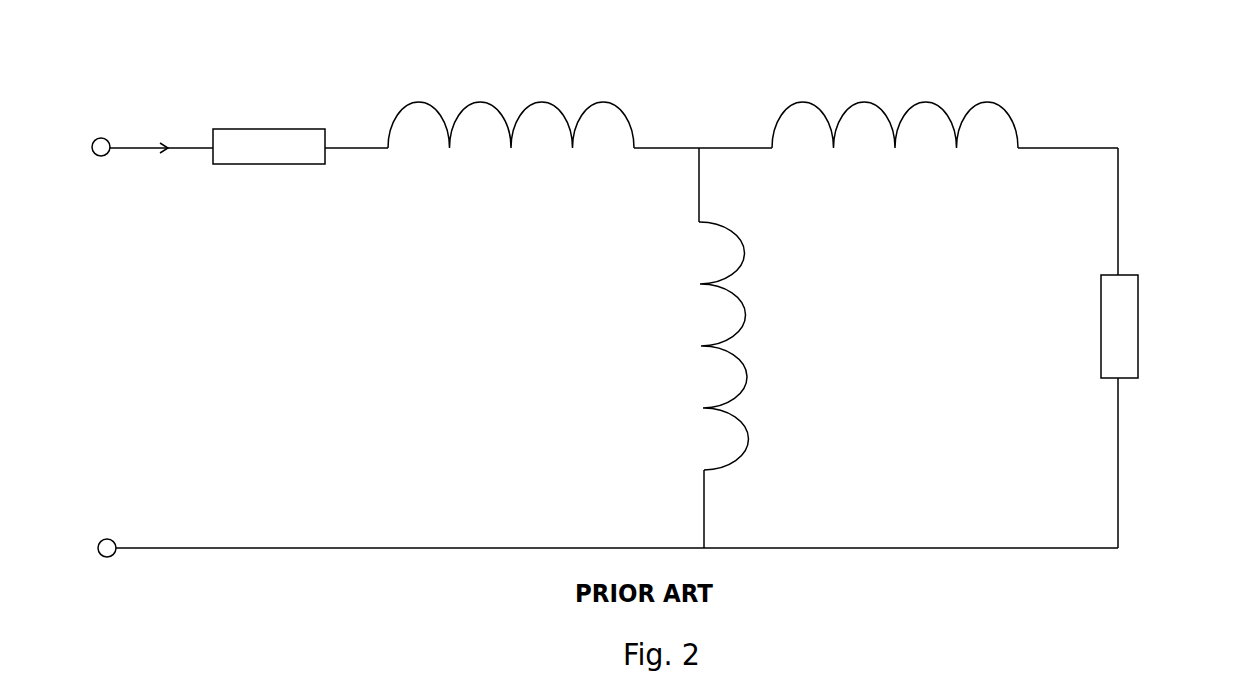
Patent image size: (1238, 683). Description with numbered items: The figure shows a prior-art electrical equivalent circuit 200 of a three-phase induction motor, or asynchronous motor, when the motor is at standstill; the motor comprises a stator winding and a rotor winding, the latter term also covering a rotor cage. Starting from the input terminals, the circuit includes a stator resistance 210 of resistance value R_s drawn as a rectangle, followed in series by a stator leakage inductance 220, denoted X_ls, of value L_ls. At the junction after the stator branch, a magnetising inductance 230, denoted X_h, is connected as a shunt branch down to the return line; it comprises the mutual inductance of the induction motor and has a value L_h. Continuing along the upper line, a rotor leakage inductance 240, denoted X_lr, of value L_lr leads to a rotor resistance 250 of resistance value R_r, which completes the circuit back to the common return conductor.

The equivalent circuit 200 is at (1144, 26).
The stator resistance 210 is at (265, 128).
The stator leakage inductance 220 is at (543, 95).
The magnetising inductance 230 is at (748, 378).
The rotor leakage inductance 240 is at (920, 102).
The rotor resistance 250 is at (1138, 312).